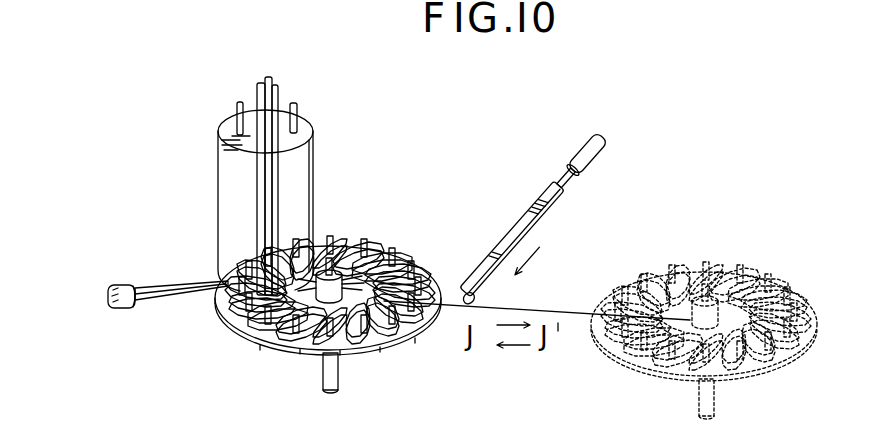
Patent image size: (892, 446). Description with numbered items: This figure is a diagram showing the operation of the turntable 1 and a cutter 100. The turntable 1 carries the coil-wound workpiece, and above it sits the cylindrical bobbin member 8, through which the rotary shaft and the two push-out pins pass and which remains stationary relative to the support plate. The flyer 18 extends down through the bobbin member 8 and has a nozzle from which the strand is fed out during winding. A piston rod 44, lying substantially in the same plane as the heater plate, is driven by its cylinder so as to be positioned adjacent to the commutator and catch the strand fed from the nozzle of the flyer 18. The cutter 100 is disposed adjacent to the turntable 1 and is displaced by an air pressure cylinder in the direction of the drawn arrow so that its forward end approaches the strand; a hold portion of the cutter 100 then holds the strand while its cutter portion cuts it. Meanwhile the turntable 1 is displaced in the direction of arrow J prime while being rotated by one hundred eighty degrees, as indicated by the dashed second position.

The turntable 1 is at (255, 346).
The bobbin member 8 is at (313, 180).
The flyer 18 is at (257, 180).
The piston rod 44 is at (158, 298).
The cutter 100 is at (508, 216).